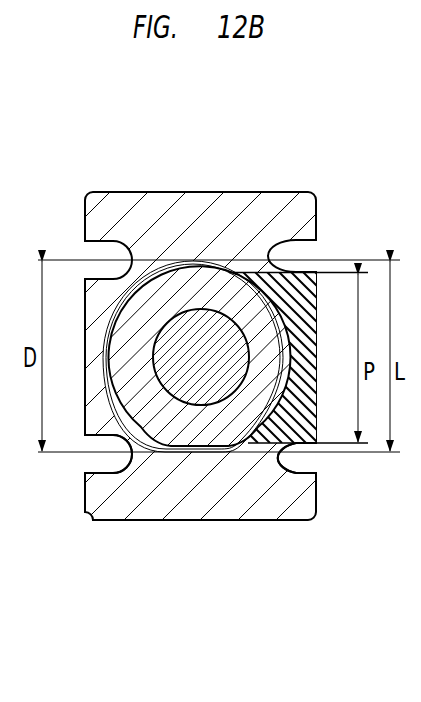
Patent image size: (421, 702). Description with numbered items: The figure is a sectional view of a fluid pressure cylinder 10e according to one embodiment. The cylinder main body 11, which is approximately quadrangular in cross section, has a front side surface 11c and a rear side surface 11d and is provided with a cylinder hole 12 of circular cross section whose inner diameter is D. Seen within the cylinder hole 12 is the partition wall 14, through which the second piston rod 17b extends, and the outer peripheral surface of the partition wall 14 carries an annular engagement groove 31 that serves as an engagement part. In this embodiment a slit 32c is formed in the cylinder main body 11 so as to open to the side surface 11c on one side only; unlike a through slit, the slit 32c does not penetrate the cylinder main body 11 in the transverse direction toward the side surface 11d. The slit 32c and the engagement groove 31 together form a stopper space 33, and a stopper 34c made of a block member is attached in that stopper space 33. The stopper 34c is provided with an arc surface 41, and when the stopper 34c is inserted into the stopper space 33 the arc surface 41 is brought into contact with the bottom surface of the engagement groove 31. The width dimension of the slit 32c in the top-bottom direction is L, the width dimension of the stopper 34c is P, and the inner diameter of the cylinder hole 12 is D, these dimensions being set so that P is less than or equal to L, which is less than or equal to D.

The fluid pressure cylinder 10e is at (210, 360).
The cylinder main body 11 is at (108, 521).
The front side surface 11c is at (318, 500).
The rear side surface 11d is at (85, 510).
The cylinder hole 12 is at (180, 454).
The partition wall 14 is at (182, 293).
The second piston rod 17b is at (213, 345).
The engagement groove 31 is at (211, 265).
The slit 32c is at (255, 272).
The stopper space 33 is at (262, 452).
The stopper 34c is at (296, 464).
The arc surface 41 is at (223, 443).